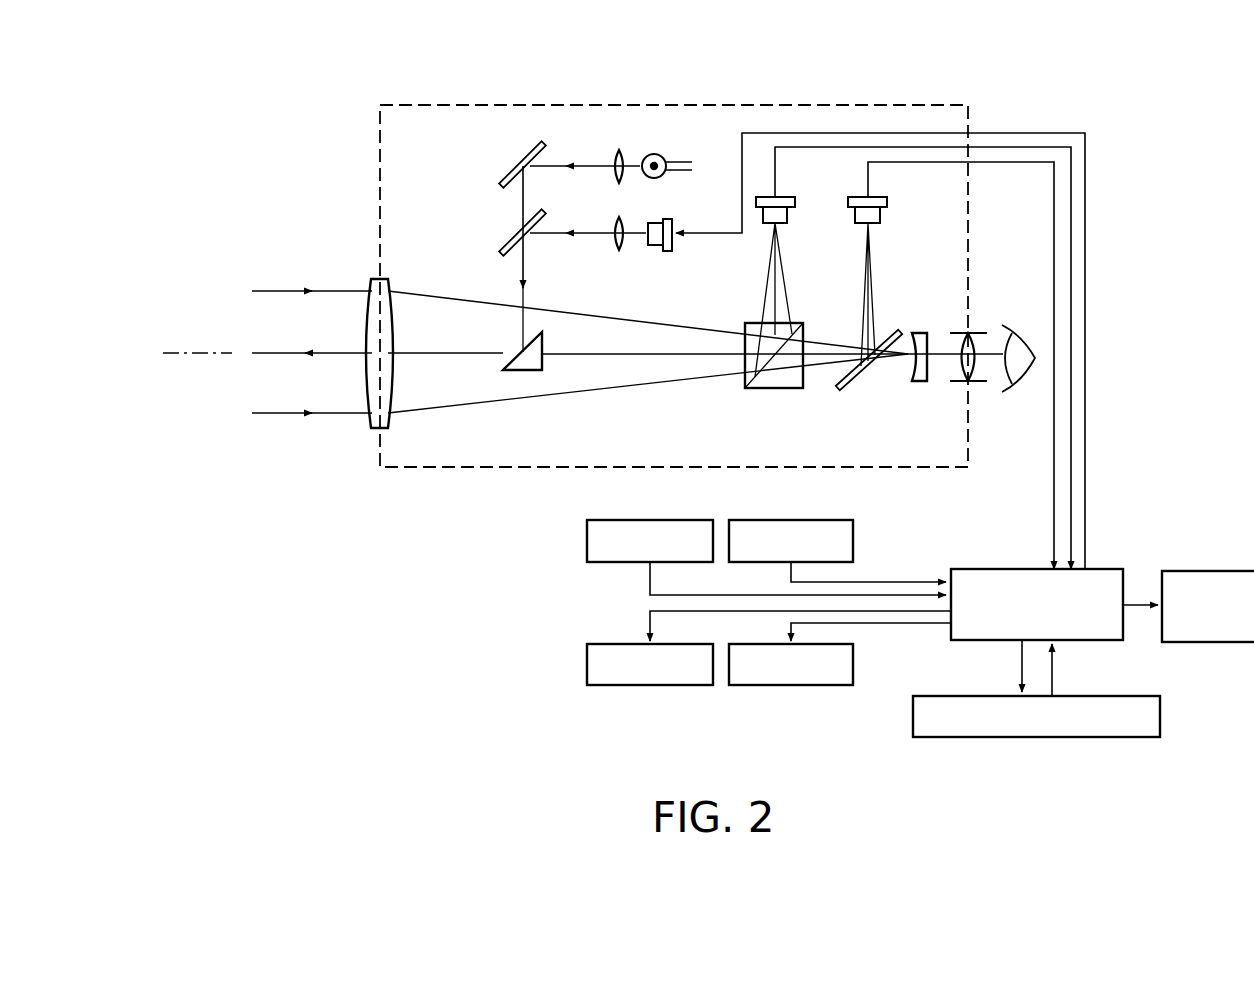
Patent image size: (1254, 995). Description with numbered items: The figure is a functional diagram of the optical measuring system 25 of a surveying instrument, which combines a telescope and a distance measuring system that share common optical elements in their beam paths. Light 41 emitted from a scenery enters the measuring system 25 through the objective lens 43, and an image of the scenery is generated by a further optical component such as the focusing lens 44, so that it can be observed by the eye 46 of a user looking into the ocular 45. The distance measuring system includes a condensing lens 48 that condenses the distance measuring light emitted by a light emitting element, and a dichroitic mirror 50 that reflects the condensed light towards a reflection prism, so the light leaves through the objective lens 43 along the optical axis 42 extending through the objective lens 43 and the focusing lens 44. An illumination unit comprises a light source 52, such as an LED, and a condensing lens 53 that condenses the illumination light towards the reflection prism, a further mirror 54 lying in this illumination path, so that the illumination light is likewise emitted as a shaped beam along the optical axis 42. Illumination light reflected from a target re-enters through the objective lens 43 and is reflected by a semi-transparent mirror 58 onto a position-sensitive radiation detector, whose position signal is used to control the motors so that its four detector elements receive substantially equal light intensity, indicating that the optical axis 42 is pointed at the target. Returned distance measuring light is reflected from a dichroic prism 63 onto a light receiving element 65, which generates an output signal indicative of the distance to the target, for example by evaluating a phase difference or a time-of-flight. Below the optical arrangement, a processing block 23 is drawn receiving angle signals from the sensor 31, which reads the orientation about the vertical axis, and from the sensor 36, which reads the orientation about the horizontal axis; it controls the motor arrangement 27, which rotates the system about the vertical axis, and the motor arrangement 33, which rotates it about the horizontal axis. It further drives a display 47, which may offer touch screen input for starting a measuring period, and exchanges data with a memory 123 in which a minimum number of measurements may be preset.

The optical measuring system 25 is at (737, 103).
The light 41 is at (270, 290).
The optical axis 42 is at (185, 355).
The objective lens 43 is at (371, 281).
The focusing lens 44 is at (920, 333).
The ocular 45 is at (978, 334).
The eye 46 is at (1018, 392).
The display 47 is at (1208, 606).
The condensing lens 48 is at (617, 252).
The dichroitic mirror 50 is at (512, 238).
The light source 52 is at (662, 155).
The condensing lens 53 is at (614, 153).
The mirror 54 is at (518, 160).
The semi-transparent mirror 58 is at (858, 378).
The dichroic prism 63 is at (778, 390).
The light receiving element 65 is at (796, 204).
The control unit 23 is at (1054, 630).
The motor arrangement 27 is at (768, 648).
The sensor 31 is at (766, 557).
The motor arrangement 33 is at (839, 654).
The sensor 36 is at (837, 551).
The memory 123 is at (1036, 690).